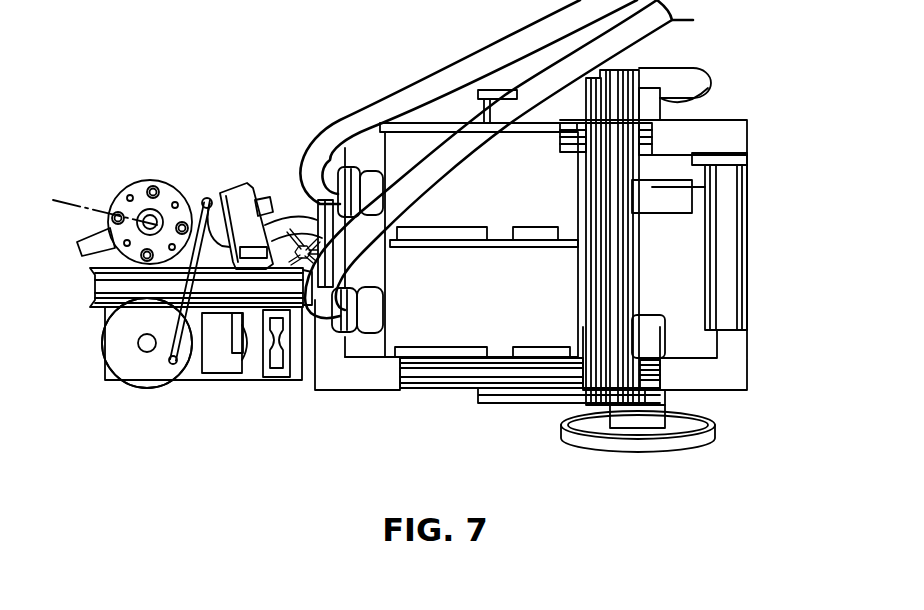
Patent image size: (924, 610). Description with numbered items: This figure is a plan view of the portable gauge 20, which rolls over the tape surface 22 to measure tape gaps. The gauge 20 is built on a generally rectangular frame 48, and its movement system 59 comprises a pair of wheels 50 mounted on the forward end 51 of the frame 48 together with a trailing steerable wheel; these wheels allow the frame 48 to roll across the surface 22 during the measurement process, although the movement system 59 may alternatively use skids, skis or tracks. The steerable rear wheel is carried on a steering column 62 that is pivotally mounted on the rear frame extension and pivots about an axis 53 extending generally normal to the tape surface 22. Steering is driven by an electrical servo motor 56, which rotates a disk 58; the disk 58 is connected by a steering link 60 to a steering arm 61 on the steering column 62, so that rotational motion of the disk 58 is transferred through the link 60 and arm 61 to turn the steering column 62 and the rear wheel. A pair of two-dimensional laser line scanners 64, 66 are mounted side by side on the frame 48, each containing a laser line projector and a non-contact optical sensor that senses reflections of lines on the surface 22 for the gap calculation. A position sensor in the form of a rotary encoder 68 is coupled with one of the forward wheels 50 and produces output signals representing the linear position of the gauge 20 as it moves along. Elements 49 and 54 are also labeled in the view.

The portable gauge 20 is at (172, 82).
The tape surface 22 is at (280, 412).
The frame 48 is at (437, 373).
The rail 49 is at (103, 285).
The wheels 50 is at (703, 78).
The forward end 51 is at (746, 240).
The axis 53 is at (82, 207).
The bracket plate 54 is at (235, 193).
The electrical servo motor 56 is at (217, 360).
The disk 58 is at (143, 377).
The movement system 59 is at (700, 60).
The steering link 60 is at (108, 343).
The steering arm 61 is at (217, 192).
The steering column 62 is at (131, 197).
The 2-D laser line scanner 64 is at (471, 213).
The 2-D laser line scanner 66 is at (410, 332).
The rotary encoder 68 is at (650, 332).